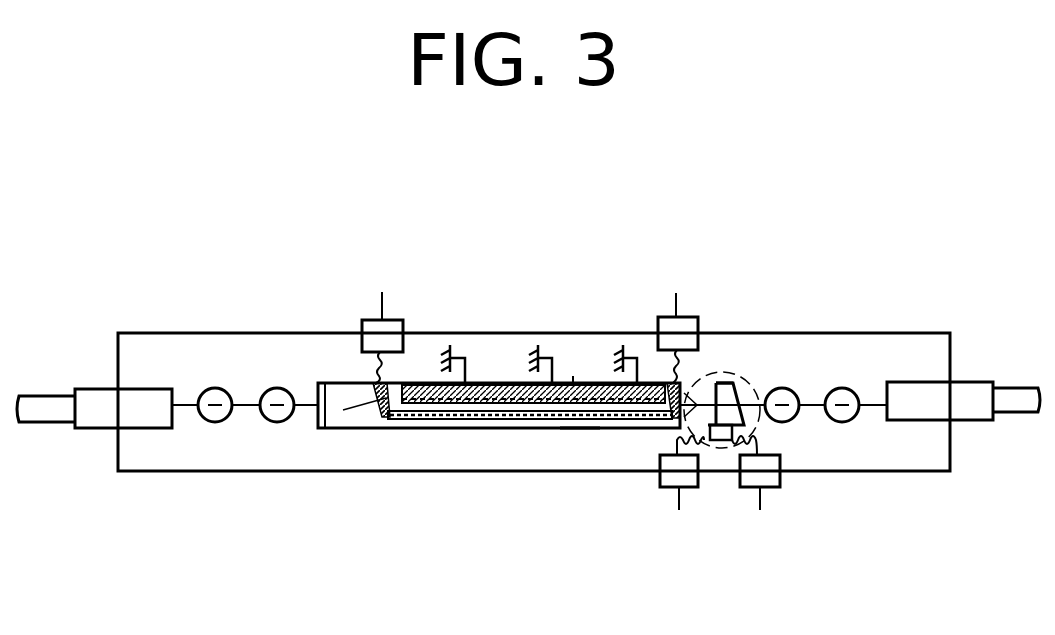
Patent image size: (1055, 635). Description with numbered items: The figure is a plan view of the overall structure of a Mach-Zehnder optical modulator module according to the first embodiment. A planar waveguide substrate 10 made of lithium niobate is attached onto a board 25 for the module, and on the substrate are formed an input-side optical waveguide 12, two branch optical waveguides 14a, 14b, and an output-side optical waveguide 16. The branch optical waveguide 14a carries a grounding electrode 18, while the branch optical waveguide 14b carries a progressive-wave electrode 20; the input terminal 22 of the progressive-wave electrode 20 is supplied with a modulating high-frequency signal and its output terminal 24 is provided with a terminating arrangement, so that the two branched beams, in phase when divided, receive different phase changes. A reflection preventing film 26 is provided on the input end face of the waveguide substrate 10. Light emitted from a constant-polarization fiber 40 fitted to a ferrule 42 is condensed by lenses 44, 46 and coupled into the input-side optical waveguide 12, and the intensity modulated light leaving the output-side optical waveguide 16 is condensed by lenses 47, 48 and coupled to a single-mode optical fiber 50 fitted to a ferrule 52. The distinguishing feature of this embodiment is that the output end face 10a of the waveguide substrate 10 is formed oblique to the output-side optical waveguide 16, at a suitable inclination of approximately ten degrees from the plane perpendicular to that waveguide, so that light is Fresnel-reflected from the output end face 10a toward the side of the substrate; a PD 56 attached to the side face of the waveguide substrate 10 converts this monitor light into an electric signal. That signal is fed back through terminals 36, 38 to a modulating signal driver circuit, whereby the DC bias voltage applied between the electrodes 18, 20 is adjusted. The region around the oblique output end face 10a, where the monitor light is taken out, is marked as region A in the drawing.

The planar waveguide substrate 10 is at (726, 378).
The output end face 10a is at (745, 386).
The input-side optical waveguide 12 is at (343, 410).
The branch optical waveguide 14a is at (495, 390).
The branch optical waveguide 14b is at (495, 419).
The output-side optical waveguide 16 is at (717, 383).
The grounding electrode 18 is at (573, 383).
The progressive-wave electrode 20 is at (582, 428).
The input terminal 22 is at (402, 320).
The output terminal 24 is at (658, 318).
The board 25 is at (402, 471).
The reflection preventing film 26 is at (316, 418).
The terminal 36 is at (661, 487).
The terminal 38 is at (781, 487).
The constant-polarization fiber 40 is at (41, 400).
The ferrule 42 is at (92, 392).
The lens 44 is at (213, 388).
The lens 46 is at (276, 388).
The lens 47 is at (797, 392).
The lens 48 is at (855, 389).
The single-mode optical fiber 50 is at (1008, 388).
The ferrule 52 is at (980, 421).
The PD 56 is at (722, 440).
The region A is at (768, 431).